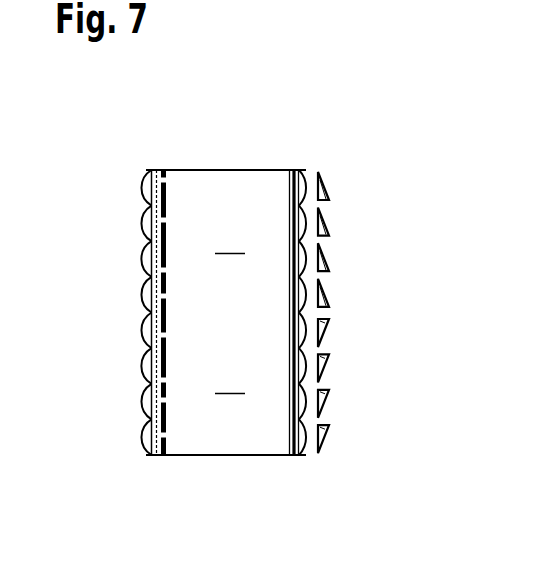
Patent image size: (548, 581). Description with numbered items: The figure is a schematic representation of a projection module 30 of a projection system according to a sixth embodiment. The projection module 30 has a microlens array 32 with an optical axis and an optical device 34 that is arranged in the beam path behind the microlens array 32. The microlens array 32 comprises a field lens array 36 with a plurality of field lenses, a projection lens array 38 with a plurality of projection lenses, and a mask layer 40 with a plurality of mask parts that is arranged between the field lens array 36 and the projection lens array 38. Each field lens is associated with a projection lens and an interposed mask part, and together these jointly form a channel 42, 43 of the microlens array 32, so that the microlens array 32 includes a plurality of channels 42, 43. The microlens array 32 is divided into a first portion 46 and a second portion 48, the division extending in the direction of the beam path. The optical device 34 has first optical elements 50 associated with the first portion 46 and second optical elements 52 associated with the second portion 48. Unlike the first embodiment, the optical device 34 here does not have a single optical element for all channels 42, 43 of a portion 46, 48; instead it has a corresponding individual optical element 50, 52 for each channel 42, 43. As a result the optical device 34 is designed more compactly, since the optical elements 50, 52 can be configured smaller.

The projection module 30 is at (133, 303).
The microlens array 32 is at (256, 162).
The optical device 34 is at (328, 165).
The field lens array 36 is at (149, 195).
The projection lens array 38 is at (302, 171).
The mask layer 40 is at (172, 170).
The channel 42 is at (230, 193).
The channel 43 is at (218, 440).
The first portion 46 is at (230, 239).
The second portion 48 is at (230, 379).
The first optical element 50 is at (376, 296).
The second optical element 52 is at (376, 445).